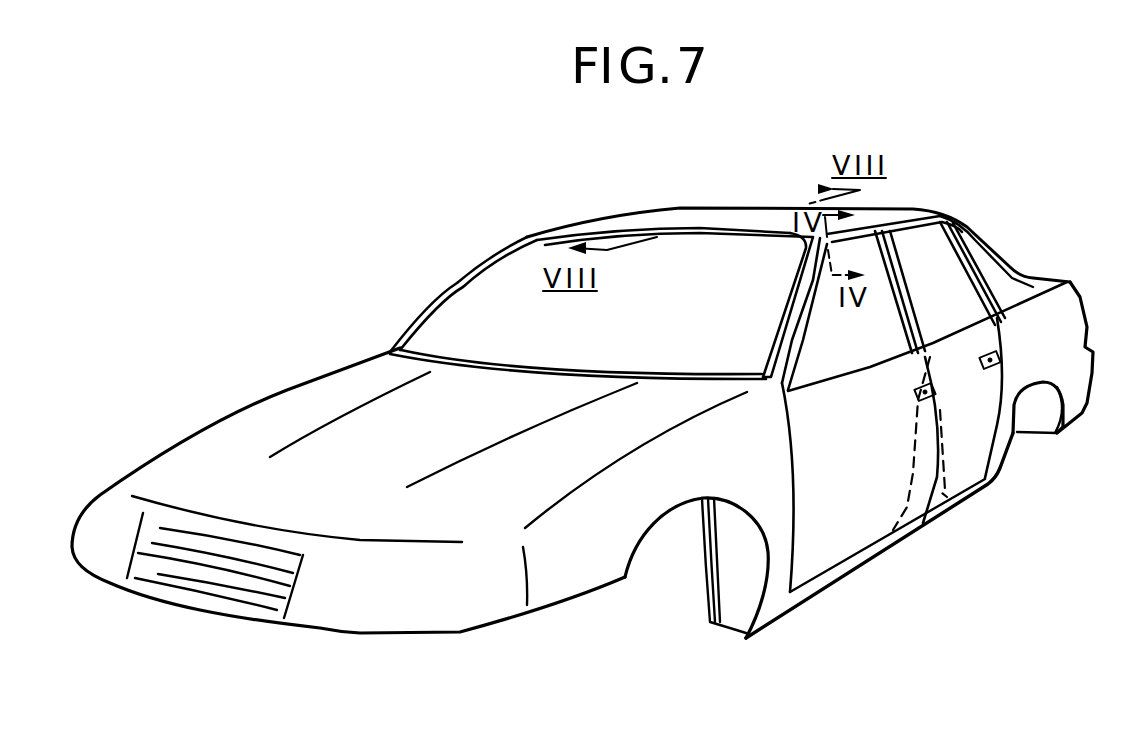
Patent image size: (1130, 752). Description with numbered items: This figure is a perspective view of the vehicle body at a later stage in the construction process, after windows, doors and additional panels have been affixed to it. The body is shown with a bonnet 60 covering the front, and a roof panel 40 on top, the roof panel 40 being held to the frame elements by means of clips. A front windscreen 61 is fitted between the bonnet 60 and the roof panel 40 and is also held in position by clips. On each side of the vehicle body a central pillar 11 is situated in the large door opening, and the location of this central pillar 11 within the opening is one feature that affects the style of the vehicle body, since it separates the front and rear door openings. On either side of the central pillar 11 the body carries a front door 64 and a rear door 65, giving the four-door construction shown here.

The roof panel 40 is at (647, 218).
The front windscreen 61 is at (480, 305).
The bonnet 60 is at (397, 455).
The front door 64 is at (852, 537).
The rear door 65 is at (972, 453).
The central pillar 11 is at (922, 528).